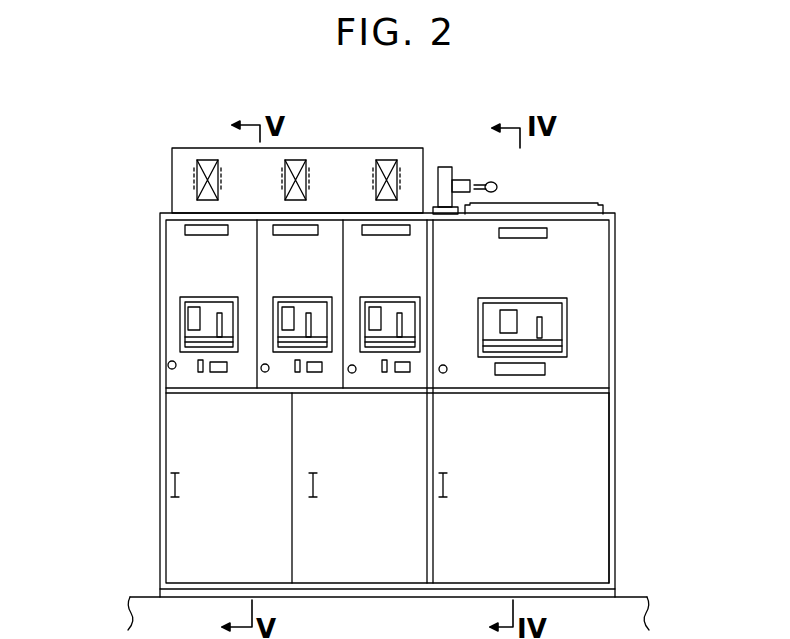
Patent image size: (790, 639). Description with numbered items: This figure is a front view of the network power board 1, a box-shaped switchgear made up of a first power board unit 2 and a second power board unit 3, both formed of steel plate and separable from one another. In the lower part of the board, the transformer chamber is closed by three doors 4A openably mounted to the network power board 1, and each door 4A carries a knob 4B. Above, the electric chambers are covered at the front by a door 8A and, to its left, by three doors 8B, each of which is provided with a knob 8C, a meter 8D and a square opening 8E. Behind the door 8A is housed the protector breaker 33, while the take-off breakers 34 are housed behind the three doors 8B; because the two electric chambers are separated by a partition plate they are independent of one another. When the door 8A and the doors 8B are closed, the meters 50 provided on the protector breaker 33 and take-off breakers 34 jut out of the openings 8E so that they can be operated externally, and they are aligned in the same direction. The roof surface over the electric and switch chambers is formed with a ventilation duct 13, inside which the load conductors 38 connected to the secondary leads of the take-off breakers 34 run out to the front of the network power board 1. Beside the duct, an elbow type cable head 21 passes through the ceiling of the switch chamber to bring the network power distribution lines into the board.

The network power board 1 is at (160, 232).
The first power board unit 2 is at (580, 495).
The second power board unit 3 is at (180, 450).
The door 4A is at (473, 465).
The knob 4B is at (167, 483).
The door 8A is at (592, 272).
The door 8B is at (190, 268).
The knob 8C is at (168, 364).
The meter 8D is at (197, 370).
The square opening 8E is at (510, 300).
The ventilation duct 13 is at (316, 170).
The elbow type cable head 21 is at (480, 182).
The protector breaker 33 is at (567, 325).
The take-off breaker 34 is at (190, 313).
The load conductor 38 is at (383, 192).
The meter 50 is at (392, 320).